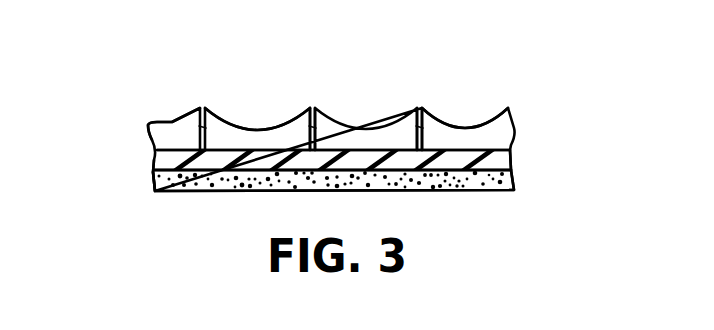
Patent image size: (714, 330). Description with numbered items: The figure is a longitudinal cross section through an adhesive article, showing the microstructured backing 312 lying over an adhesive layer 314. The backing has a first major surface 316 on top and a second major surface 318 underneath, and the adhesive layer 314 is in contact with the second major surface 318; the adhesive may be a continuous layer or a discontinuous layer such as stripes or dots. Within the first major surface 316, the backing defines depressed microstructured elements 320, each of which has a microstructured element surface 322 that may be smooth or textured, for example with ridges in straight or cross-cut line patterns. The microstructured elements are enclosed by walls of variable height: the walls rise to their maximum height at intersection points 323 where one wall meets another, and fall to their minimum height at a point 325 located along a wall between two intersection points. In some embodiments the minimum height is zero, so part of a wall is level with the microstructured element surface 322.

The microstructured backing 312 is at (497, 153).
The adhesive layer 314 is at (515, 180).
The first major surface 316 is at (170, 123).
The second major surface 318 is at (157, 183).
The depressed microstructured elements 320 is at (232, 127).
The microstructured element surface 322 is at (332, 136).
The intersection point 323 is at (421, 104).
The point along the walls 325 is at (470, 127).